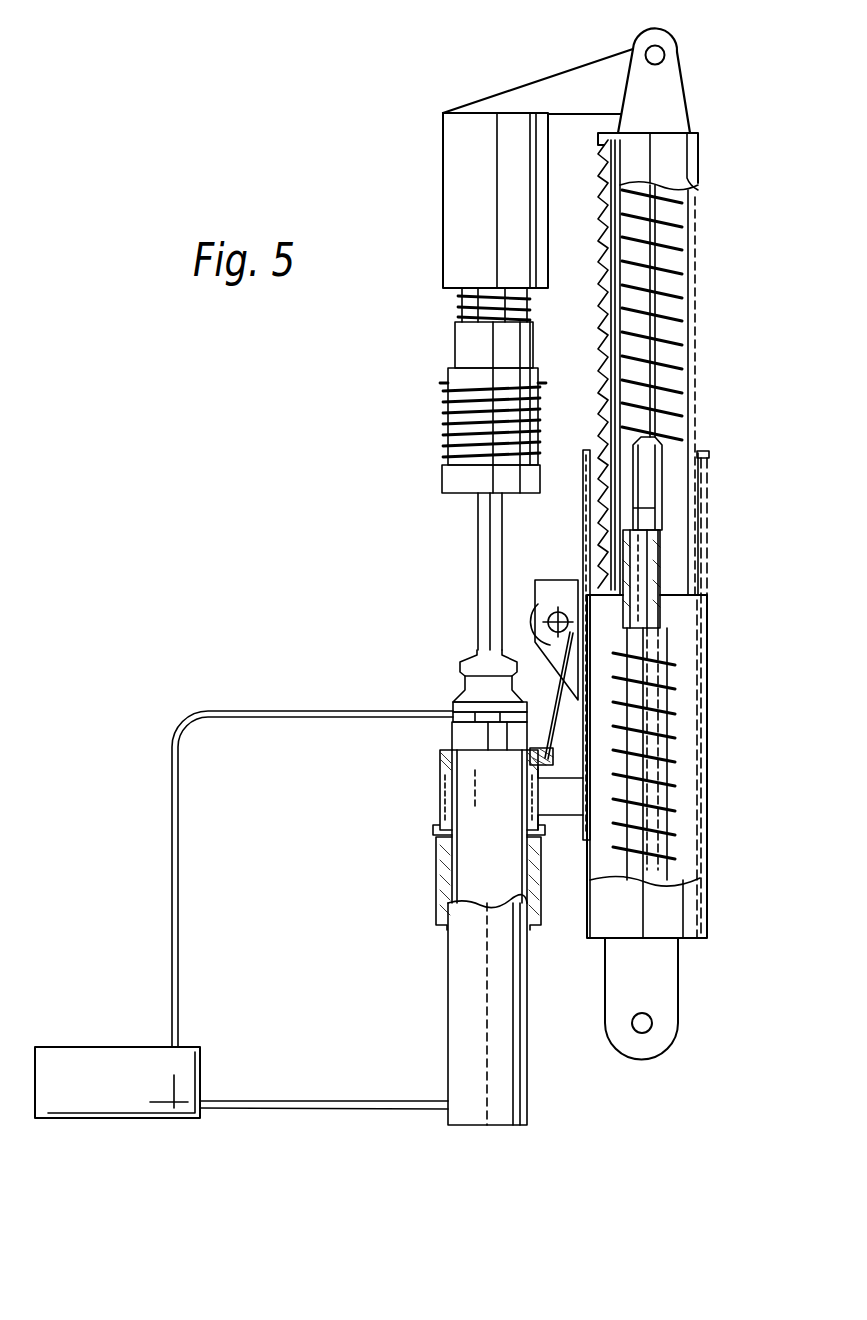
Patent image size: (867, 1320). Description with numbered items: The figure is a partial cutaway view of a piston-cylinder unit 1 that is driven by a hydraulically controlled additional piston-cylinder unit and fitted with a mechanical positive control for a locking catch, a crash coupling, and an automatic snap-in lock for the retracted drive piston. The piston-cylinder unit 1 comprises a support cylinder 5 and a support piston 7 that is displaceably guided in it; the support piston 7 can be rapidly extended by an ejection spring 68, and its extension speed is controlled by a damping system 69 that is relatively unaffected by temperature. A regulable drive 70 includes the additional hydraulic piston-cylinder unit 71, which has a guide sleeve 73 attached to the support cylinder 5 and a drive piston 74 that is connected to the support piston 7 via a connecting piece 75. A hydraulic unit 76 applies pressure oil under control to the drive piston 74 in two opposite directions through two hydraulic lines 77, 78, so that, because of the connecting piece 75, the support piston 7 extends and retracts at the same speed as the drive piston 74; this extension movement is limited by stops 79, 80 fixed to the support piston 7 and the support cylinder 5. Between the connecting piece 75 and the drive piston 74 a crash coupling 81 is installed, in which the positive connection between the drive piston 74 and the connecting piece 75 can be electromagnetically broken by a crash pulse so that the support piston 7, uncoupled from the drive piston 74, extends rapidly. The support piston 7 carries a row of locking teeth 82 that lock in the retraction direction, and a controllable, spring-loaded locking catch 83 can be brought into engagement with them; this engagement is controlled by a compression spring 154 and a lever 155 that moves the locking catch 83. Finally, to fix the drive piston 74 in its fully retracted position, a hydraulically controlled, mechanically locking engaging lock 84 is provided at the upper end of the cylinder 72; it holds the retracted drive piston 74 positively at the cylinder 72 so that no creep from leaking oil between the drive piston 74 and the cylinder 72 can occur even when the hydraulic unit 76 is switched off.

The piston-cylinder unit 1 is at (705, 435).
The support cylinder 5 is at (690, 915).
The support piston 7 is at (683, 162).
The ejection spring 68 is at (670, 832).
The damping system 69 is at (655, 563).
The regulable drive 70 is at (416, 757).
The additional hydraulic piston-cylinder unit 71 is at (460, 641).
The cylinder 72 is at (503, 1087).
The guide sleeve 73 is at (442, 805).
The drive piston 74 is at (490, 537).
The connecting piece 75 is at (570, 78).
The hydraulic unit 76 is at (88, 1058).
The hydraulic line 77 is at (328, 1100).
The hydraulic line 78 is at (172, 938).
The stop 79 is at (710, 483).
The stop 80 is at (710, 453).
The crash coupling 81 is at (460, 200).
The locking teeth 82 is at (600, 142).
The locking catch 83 is at (575, 580).
The engaging lock 84 is at (455, 480).
The compression spring 154 is at (438, 890).
The lever 155 is at (567, 695).